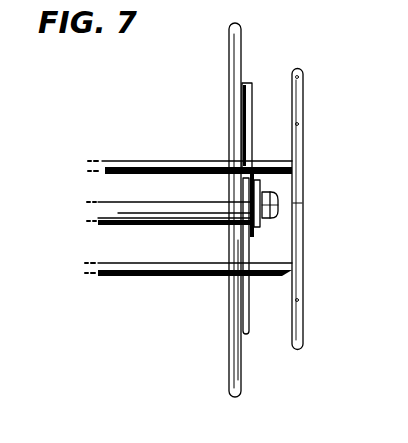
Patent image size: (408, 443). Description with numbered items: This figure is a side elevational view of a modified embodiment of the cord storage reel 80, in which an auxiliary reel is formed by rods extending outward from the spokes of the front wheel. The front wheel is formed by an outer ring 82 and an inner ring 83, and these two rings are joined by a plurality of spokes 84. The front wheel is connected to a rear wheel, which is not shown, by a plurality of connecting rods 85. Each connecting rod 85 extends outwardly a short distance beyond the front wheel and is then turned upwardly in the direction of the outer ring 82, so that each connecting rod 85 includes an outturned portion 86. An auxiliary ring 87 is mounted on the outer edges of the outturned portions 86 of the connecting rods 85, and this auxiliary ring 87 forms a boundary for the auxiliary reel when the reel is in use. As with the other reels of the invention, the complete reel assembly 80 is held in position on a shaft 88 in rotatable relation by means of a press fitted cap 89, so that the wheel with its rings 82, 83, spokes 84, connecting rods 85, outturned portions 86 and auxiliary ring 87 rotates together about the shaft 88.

The cord storage reel 80 is at (296, 38).
The outer ring 82 is at (229, 363).
The inner ring 83 is at (250, 233).
The spokes 84 is at (282, 60).
The connecting rods 85 is at (196, 161).
The outturned portion 86 is at (298, 139).
The auxiliary ring 87 is at (297, 203).
The shaft 88 is at (135, 215).
The press fitted cap 89 is at (275, 222).